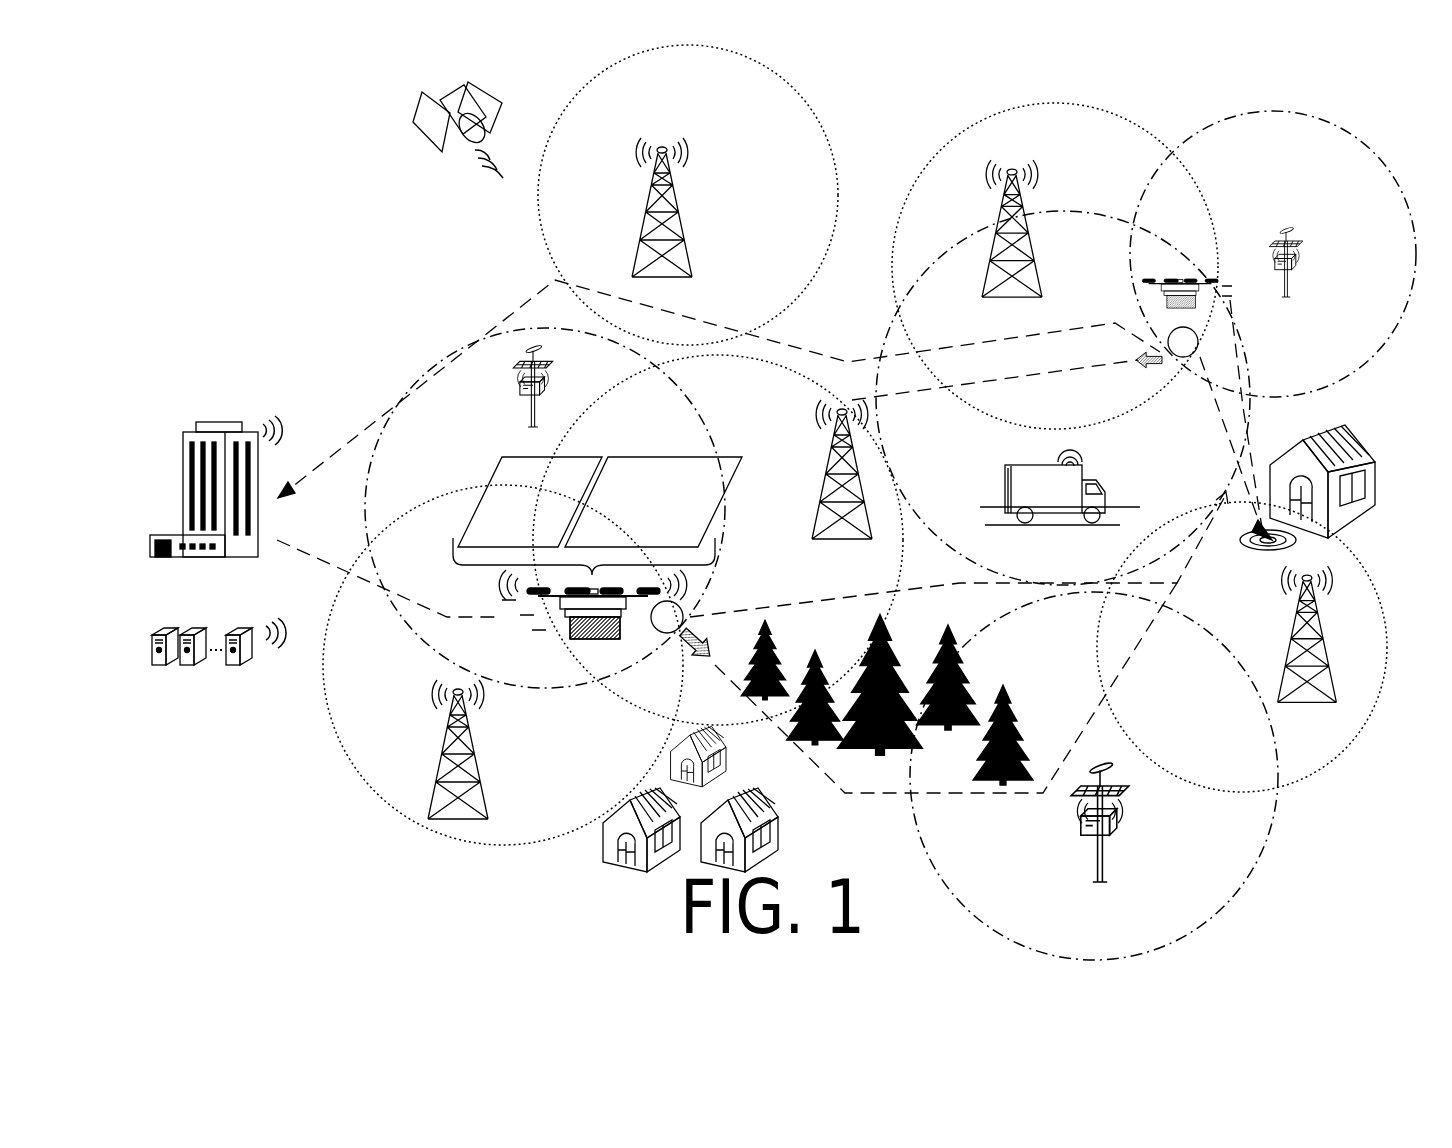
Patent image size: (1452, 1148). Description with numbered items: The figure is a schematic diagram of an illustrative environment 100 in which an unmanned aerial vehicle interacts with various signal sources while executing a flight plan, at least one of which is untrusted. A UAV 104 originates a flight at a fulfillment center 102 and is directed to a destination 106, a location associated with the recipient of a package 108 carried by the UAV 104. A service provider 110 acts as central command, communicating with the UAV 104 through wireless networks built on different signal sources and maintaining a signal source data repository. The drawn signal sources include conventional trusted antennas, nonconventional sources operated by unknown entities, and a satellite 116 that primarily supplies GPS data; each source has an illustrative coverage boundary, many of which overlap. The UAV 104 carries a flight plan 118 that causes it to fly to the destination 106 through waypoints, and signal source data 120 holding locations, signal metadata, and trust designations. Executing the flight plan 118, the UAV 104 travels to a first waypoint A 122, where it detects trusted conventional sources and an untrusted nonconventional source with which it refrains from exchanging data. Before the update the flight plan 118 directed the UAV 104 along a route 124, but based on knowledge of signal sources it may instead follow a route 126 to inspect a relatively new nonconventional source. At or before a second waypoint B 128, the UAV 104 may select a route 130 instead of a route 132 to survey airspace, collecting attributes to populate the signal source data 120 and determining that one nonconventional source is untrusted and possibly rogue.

The environment 100 is at (198, 120).
The fulfillment center 102 is at (219, 459).
The unmanned aerial vehicle 104 is at (553, 610).
The destination 106 is at (1338, 432).
The package 108 is at (598, 638).
The service provider 110 is at (213, 672).
The satellite 116 is at (413, 118).
The flight plan 118 is at (556, 457).
The signal source data 120 is at (637, 457).
The first waypoint A 122 is at (668, 640).
The route 124 is at (795, 605).
The route 126 is at (805, 755).
The second waypoint B 128 is at (1198, 335).
The route 130 is at (1108, 370).
The route 132 is at (1243, 410).